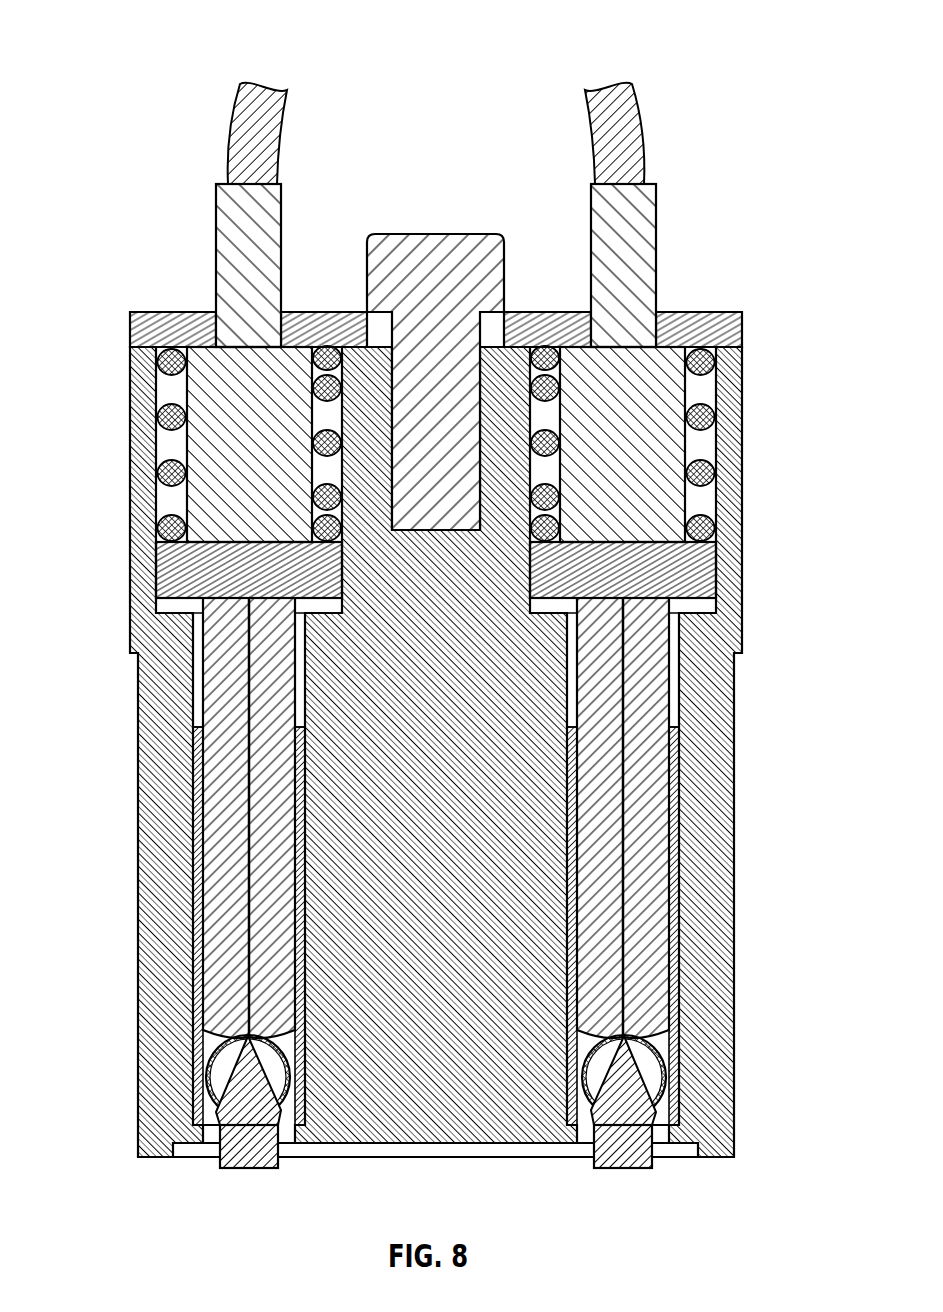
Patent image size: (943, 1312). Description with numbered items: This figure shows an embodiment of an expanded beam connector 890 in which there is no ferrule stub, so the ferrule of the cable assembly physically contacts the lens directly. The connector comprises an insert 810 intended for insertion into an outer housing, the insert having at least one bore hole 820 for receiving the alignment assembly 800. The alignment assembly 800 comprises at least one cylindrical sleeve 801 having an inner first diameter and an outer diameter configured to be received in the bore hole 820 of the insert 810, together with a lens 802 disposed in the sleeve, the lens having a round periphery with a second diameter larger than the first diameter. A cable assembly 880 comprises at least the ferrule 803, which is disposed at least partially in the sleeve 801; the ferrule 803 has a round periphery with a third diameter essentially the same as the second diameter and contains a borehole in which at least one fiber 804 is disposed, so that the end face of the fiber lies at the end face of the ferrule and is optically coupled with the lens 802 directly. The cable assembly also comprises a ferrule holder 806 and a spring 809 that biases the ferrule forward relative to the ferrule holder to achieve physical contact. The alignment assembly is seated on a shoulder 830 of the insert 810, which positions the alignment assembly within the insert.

The expanded beam connector 890 is at (131, 47).
The cable assembly 880 is at (192, 258).
The spring 809 is at (163, 477).
The ferrule holder 806 is at (182, 576).
The bore hole 820 is at (190, 674).
The insert 810 is at (170, 745).
The ferrule 803 is at (215, 795).
The alignment assembly 800 is at (183, 880).
The fiber 804 is at (235, 928).
The cylindrical sleeve 801 is at (197, 1015).
The lens 802 is at (205, 1080).
The shoulder 830 is at (683, 1090).